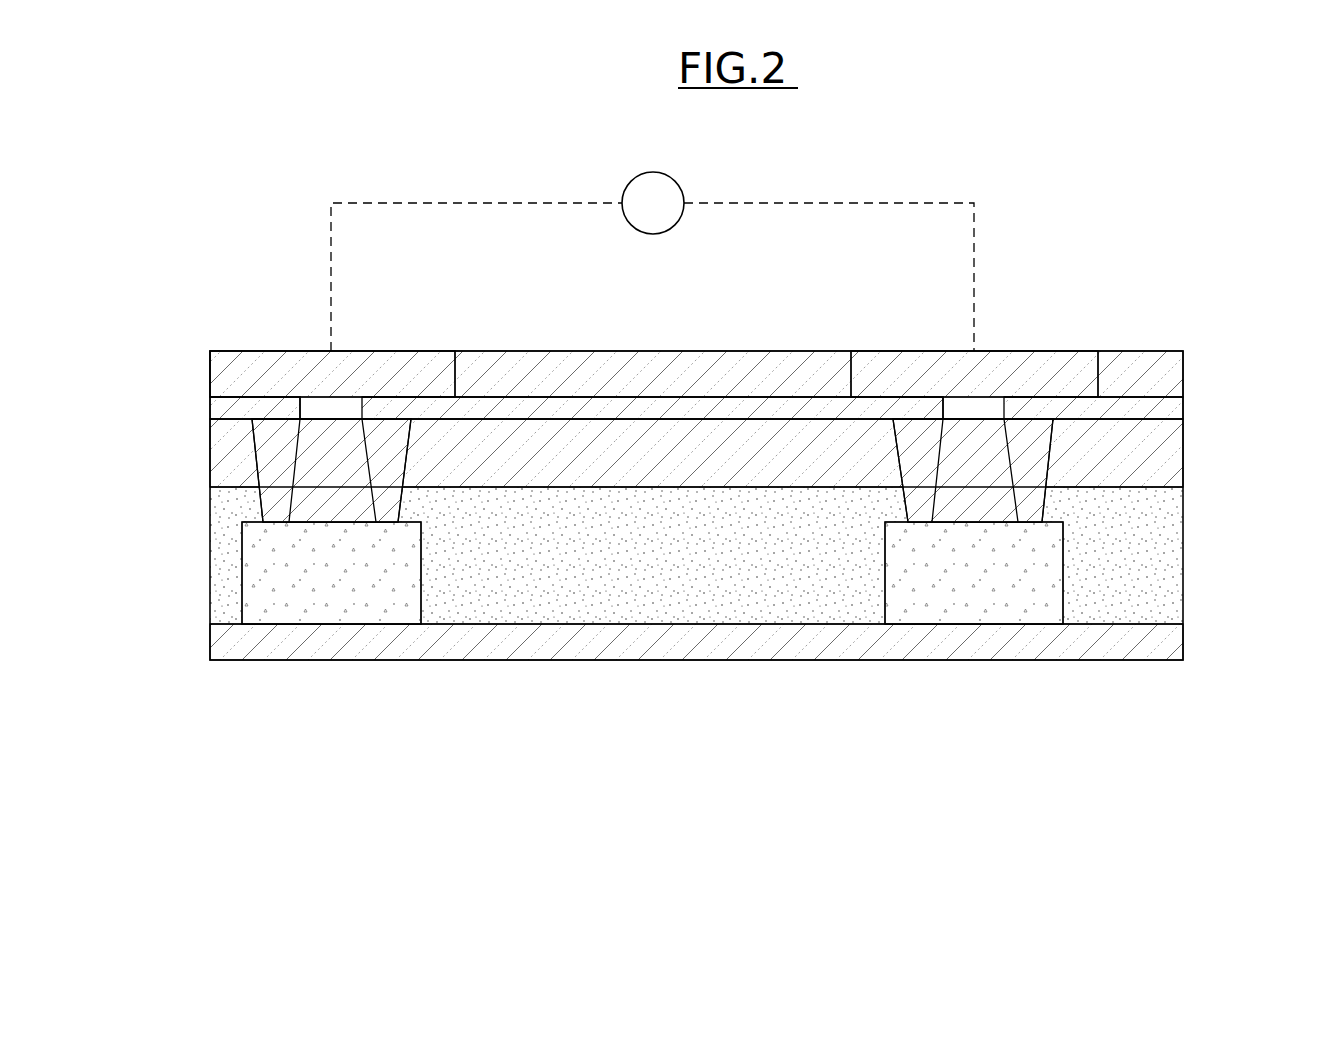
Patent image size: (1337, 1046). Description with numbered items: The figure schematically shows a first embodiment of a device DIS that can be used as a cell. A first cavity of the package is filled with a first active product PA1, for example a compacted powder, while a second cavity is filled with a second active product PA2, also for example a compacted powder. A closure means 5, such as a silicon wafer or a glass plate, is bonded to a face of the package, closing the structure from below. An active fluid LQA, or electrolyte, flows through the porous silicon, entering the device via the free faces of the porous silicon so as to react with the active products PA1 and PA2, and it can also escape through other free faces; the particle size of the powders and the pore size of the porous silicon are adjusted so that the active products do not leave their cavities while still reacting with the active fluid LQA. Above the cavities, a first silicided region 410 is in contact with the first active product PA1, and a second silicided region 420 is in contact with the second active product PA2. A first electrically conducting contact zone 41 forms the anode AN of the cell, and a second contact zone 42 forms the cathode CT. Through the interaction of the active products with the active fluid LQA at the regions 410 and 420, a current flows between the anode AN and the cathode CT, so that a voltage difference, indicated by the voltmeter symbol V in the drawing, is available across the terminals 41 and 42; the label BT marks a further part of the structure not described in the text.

The device DIS is at (717, 447).
The active fluid LQA is at (240, 575).
The closure means 5 is at (636, 642).
The first active product PA1 is at (318, 568).
The second active product PA2 is at (962, 568).
The first silicided region 410 is at (322, 456).
The second silicided region 420 is at (1035, 455).
The first electrically conducting contact zone 41 is at (365, 312).
The second contact zone 42 is at (1006, 312).
The anode AN is at (298, 312).
The cathode CT is at (943, 312).
The bottom/top electrode layer BT is at (1190, 300).
The voltage source V is at (652, 261).